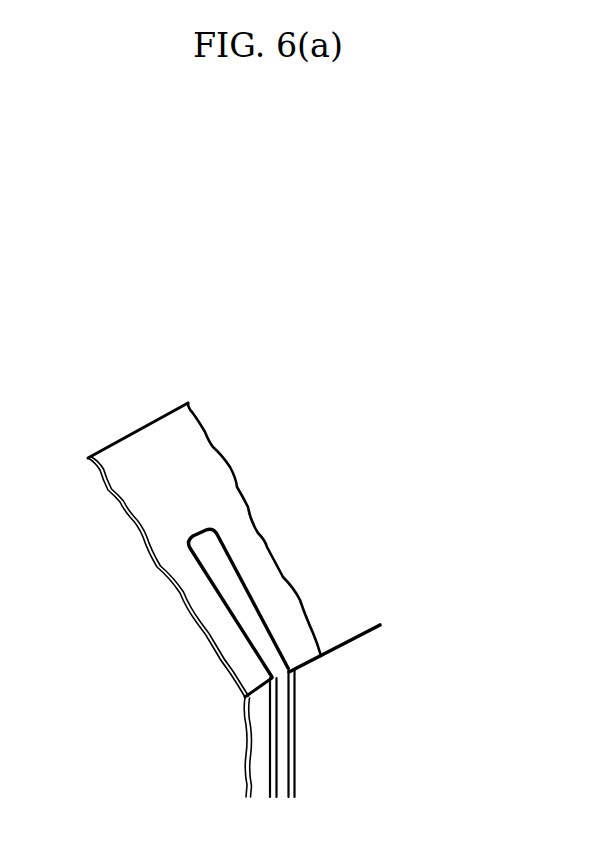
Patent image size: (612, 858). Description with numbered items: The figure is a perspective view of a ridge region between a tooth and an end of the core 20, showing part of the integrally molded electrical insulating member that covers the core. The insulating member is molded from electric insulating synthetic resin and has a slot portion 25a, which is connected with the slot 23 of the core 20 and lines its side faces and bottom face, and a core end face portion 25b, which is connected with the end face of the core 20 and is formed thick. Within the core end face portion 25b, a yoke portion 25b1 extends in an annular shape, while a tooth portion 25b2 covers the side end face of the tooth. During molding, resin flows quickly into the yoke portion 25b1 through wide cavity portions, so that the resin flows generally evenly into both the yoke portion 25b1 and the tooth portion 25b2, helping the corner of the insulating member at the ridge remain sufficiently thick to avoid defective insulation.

The core 20 is at (252, 746).
The slot 23 is at (226, 569).
The slot portion 25a is at (294, 768).
The core end face portion 25b is at (118, 440).
The yoke portion 25b1 is at (189, 428).
The tooth portion 25b2 is at (300, 654).